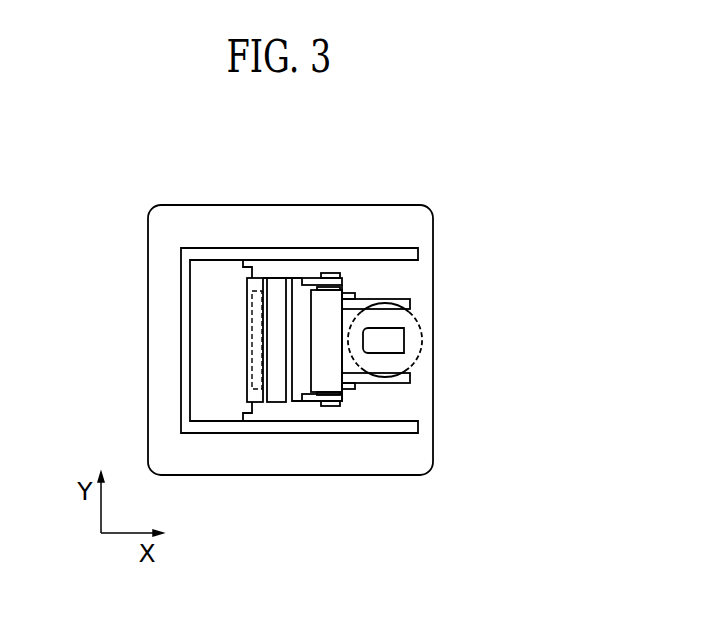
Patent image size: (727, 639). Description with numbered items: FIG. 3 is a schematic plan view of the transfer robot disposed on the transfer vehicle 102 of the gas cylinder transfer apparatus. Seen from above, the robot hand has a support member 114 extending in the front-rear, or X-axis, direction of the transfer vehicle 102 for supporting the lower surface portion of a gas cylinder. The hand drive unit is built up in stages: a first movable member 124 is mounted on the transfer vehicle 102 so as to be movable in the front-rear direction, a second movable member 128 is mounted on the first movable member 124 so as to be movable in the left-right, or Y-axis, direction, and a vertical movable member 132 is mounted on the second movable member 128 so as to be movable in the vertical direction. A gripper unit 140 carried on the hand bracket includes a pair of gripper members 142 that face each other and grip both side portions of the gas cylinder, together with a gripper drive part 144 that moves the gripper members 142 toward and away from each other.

The transfer vehicle 102 is at (424, 230).
The support member 114 is at (412, 340).
The first movable member 124 is at (190, 337).
The second movable member 128 is at (258, 400).
The vertical movable member 132 is at (278, 281).
The gripper unit 140 is at (413, 390).
The gripper members 142 is at (412, 377).
The gripper drive part 144 is at (330, 384).